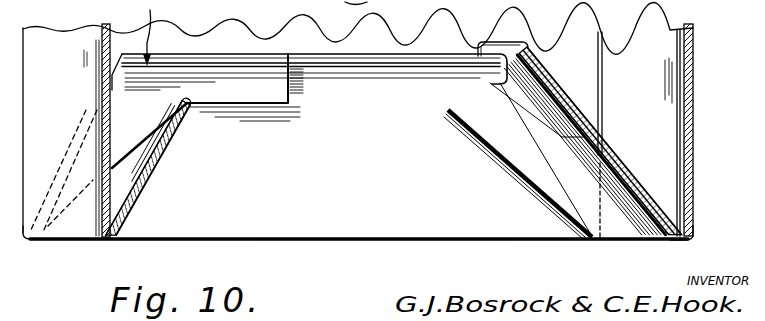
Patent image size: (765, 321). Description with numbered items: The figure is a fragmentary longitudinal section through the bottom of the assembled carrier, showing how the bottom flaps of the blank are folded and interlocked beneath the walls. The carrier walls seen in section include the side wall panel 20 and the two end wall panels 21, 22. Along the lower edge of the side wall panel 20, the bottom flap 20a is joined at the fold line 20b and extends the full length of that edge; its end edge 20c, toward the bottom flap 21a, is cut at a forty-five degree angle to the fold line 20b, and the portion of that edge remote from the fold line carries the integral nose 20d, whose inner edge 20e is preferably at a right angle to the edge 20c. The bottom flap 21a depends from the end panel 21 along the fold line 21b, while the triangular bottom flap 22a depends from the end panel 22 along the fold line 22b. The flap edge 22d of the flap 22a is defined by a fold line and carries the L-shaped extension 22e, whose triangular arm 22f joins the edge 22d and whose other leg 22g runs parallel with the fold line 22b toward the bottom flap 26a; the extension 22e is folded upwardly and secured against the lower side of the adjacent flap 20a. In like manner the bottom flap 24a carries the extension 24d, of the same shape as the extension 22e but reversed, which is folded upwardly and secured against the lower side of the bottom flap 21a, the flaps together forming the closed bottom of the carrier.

The side wall panel 20 is at (193, 8).
The bottom flap 20a is at (357, 110).
The fold line 20b is at (362, 242).
The end edge 20c is at (497, 160).
The nose 20d is at (467, 60).
The inner edge of nose 20e is at (453, 105).
The end wall panel 21 is at (690, 90).
The bottom flap 21a is at (613, 156).
The fold line 21b is at (688, 237).
The end wall panel 22 is at (55, 35).
The bottom flap 22a is at (131, 168).
The fold line 22b is at (108, 240).
The end edge 22d is at (156, 131).
The extension 22e is at (81, 10).
The arm of extension 22f is at (122, 138).
The leg of extension 22g is at (257, 88).
The bottom flap 24a is at (522, 116).
The extension 24d is at (540, 92).
The bottom flap 26a is at (328, 8).